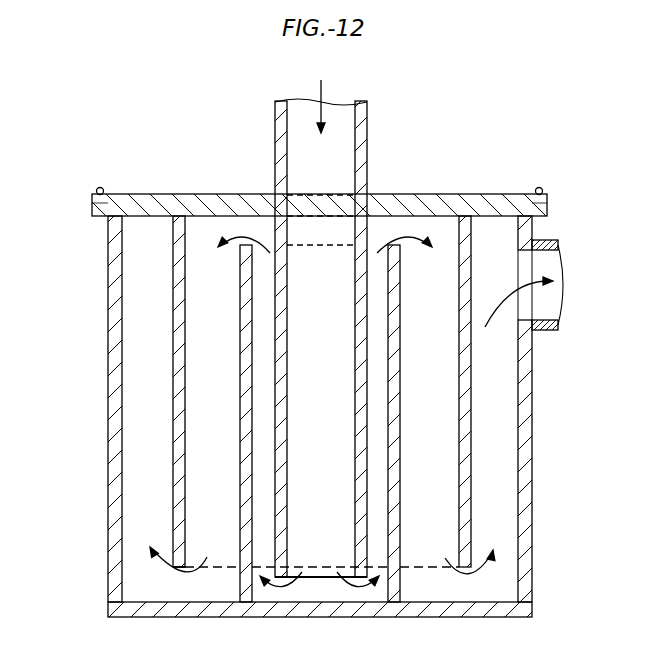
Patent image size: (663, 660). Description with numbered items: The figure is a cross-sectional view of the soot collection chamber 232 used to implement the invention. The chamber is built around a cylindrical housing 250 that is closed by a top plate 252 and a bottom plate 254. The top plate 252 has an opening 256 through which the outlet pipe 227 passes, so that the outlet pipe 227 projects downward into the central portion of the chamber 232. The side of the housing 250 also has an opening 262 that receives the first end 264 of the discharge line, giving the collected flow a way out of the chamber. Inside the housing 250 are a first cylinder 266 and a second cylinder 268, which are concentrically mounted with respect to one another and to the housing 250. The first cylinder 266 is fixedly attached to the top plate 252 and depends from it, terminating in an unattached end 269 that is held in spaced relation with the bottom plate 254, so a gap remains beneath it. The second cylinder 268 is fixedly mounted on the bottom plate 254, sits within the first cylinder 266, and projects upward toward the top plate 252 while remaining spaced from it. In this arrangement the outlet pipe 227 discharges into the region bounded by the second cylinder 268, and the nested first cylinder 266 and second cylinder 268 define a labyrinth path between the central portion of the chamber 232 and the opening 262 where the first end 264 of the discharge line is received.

The outlet pipe 227 is at (367, 180).
The separator vessel 232 is at (290, 386).
The cylindrical housing 250 is at (108, 432).
The top plate 252 is at (203, 193).
The bottom plate 254 is at (124, 618).
The opening 256 is at (284, 196).
The opening 262 is at (528, 323).
The first end 264 is at (548, 333).
The first cylinder 266 is at (458, 458).
The second cylinder 268 is at (240, 390).
The unattached end 269 is at (187, 568).